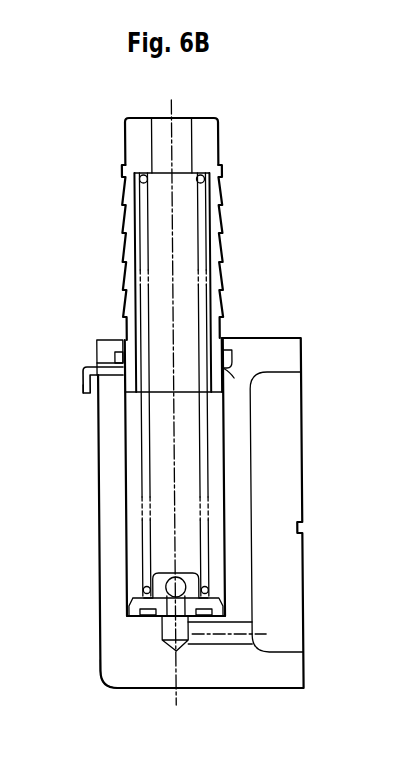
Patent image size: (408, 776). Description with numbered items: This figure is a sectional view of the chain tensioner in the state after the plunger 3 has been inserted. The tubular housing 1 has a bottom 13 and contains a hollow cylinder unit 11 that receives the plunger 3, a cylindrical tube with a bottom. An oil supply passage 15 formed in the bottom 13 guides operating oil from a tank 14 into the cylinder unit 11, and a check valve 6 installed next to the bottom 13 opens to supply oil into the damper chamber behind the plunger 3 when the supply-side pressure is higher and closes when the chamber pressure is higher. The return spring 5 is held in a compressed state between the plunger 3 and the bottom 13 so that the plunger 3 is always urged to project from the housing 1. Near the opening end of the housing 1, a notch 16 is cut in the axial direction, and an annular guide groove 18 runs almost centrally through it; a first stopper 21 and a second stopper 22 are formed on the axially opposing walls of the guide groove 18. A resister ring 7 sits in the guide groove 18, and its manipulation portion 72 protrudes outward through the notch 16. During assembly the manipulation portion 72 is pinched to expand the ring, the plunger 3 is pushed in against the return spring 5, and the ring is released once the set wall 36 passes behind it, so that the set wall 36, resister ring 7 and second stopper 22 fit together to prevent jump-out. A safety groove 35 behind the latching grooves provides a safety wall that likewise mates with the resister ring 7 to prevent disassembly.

The housing 1 is at (135, 697).
The plunger 3 is at (224, 113).
The return spring 5 is at (202, 457).
The check valve 6 is at (133, 591).
The resister ring 7 is at (74, 378).
The cylinder unit 11 is at (213, 572).
The bottom of the housing 13 is at (114, 652).
The tank 14 is at (279, 500).
The oil supply passage 15 is at (219, 640).
The notch 16 is at (109, 345).
The guide groove 18 is at (98, 360).
The first stopper 21 is at (230, 370).
The second stopper 22 is at (229, 347).
The safety groove 35 is at (222, 299).
The set wall 36 is at (220, 167).
The manipulation portion 72 is at (80, 387).